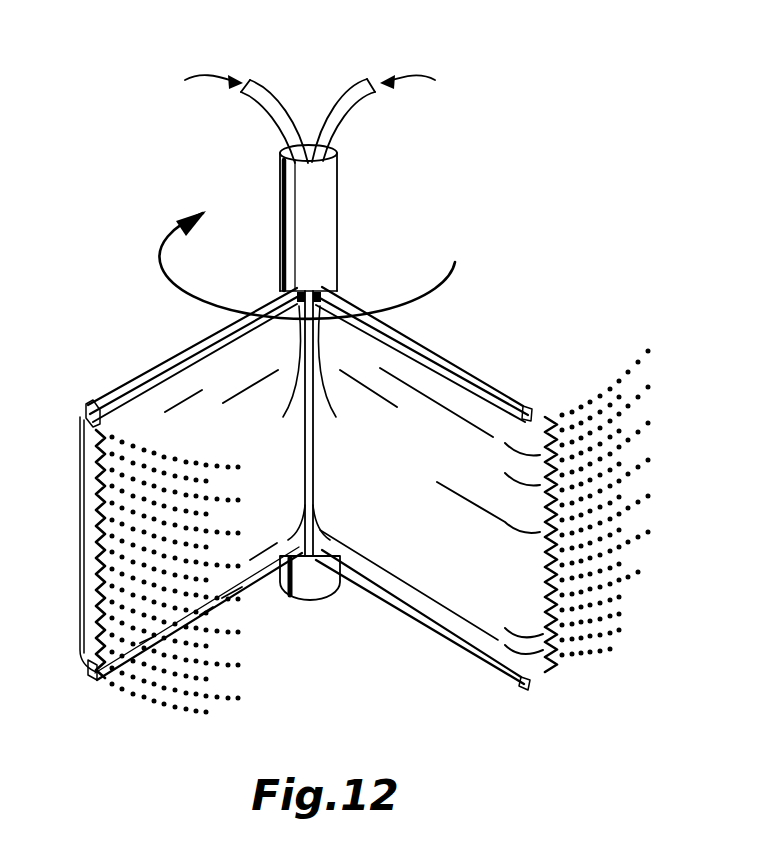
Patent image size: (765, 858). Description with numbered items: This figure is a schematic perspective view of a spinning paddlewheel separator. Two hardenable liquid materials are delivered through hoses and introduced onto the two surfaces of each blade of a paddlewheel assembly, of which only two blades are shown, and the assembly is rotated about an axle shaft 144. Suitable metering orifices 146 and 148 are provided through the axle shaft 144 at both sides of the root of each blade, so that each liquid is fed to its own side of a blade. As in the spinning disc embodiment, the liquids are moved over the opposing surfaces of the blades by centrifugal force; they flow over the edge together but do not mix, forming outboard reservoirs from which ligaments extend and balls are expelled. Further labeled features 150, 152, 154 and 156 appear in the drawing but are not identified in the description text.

The axle shaft 144 is at (342, 95).
The metering orifice 146 is at (280, 100).
The metering orifice 148 is at (152, 372).
The rotating assembly 150 is at (440, 232).
The tube 152 is at (340, 190).
The post 154 is at (322, 290).
The post 156 is at (299, 290).